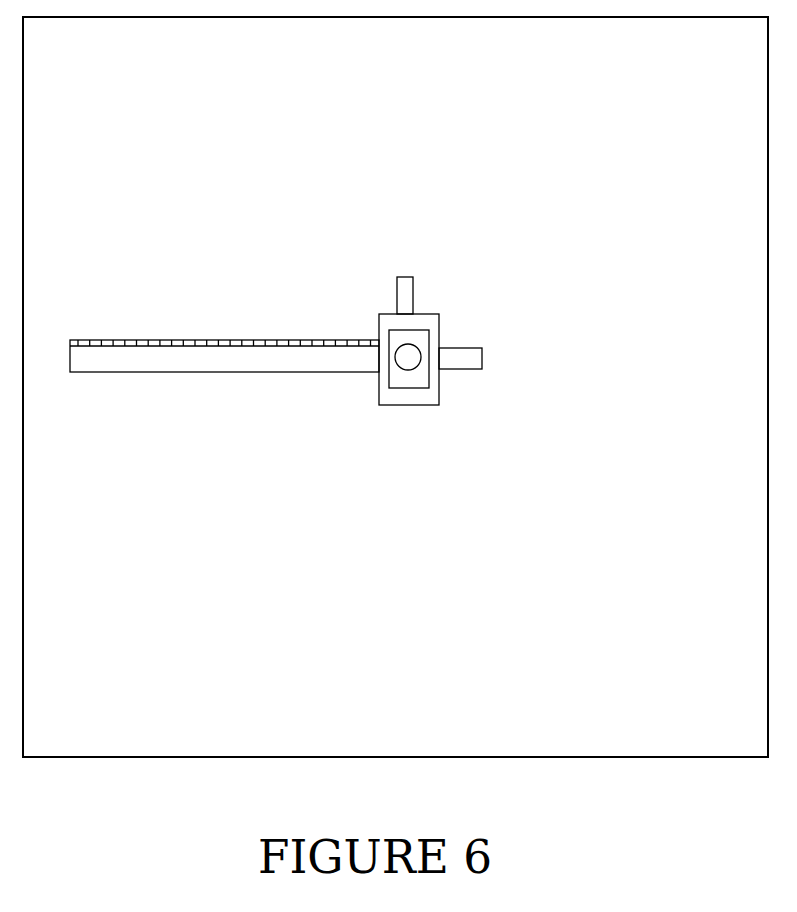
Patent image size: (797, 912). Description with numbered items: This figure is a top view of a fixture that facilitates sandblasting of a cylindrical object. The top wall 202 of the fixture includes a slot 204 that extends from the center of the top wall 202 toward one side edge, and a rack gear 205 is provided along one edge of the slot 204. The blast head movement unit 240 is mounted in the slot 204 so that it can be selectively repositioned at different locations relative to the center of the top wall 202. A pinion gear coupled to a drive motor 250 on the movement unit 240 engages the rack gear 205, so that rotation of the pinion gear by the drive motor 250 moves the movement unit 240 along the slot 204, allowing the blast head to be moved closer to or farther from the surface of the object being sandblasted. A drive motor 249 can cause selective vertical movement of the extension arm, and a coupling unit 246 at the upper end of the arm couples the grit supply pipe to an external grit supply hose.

The top wall 202 is at (688, 87).
The slot 204 is at (128, 372).
The rack gear 205 is at (292, 340).
The blast head movement unit 240 is at (400, 405).
The coupling unit 246 is at (429, 340).
The drive motor 249 is at (482, 358).
The drive motor 250 is at (403, 276).